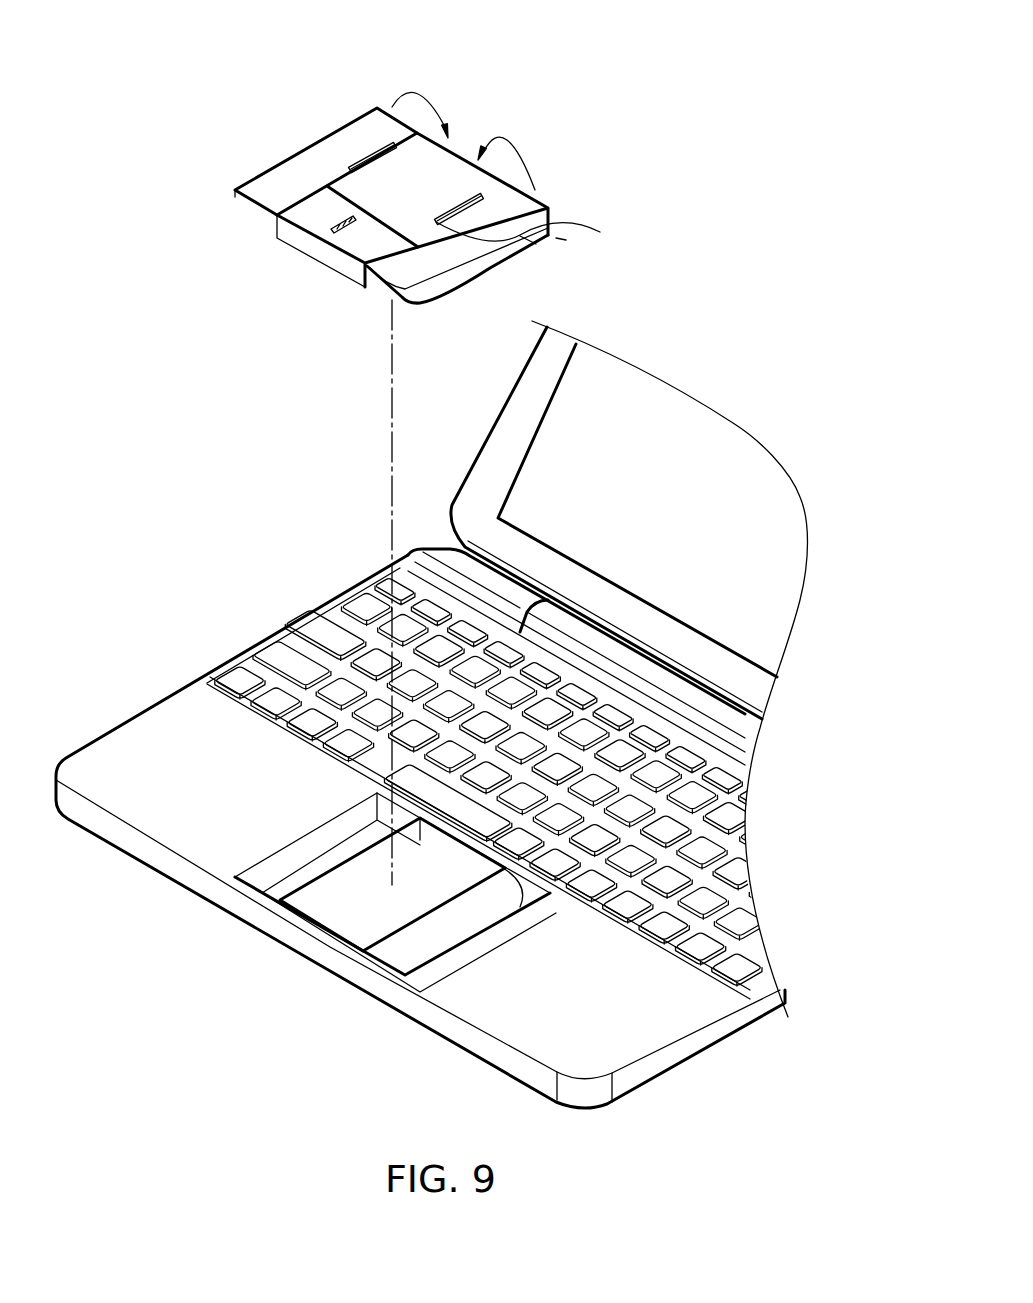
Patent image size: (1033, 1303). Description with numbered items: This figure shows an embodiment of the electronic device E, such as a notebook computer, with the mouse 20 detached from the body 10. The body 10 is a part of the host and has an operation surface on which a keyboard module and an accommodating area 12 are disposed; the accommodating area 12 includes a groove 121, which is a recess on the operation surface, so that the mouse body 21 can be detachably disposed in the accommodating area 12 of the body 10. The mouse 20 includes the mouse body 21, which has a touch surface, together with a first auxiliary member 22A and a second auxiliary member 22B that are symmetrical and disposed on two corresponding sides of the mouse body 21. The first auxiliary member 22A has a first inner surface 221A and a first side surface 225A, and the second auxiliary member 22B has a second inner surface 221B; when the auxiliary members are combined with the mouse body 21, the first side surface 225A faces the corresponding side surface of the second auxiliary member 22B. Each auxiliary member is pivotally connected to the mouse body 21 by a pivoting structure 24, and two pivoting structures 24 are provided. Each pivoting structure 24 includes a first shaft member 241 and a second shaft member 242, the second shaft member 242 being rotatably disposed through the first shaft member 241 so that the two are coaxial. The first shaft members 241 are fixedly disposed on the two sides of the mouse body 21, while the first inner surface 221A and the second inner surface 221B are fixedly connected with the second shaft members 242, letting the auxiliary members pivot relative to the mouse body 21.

The body 10 is at (209, 724).
The accommodating area 12 is at (280, 850).
The groove 121 is at (400, 923).
The mouse 20 is at (431, 181).
The mouse body 21 is at (355, 241).
The first auxiliary member 22A is at (395, 278).
The second auxiliary member 22B is at (262, 200).
The first inner surface 221A is at (547, 206).
The second inner surface 221B is at (378, 118).
The first side surface 225A is at (600, 232).
The pivoting structure 24 is at (454, 207).
The first shaft member 241 is at (520, 236).
The second shaft member 242 is at (633, 258).
The electronic device E is at (482, 452).